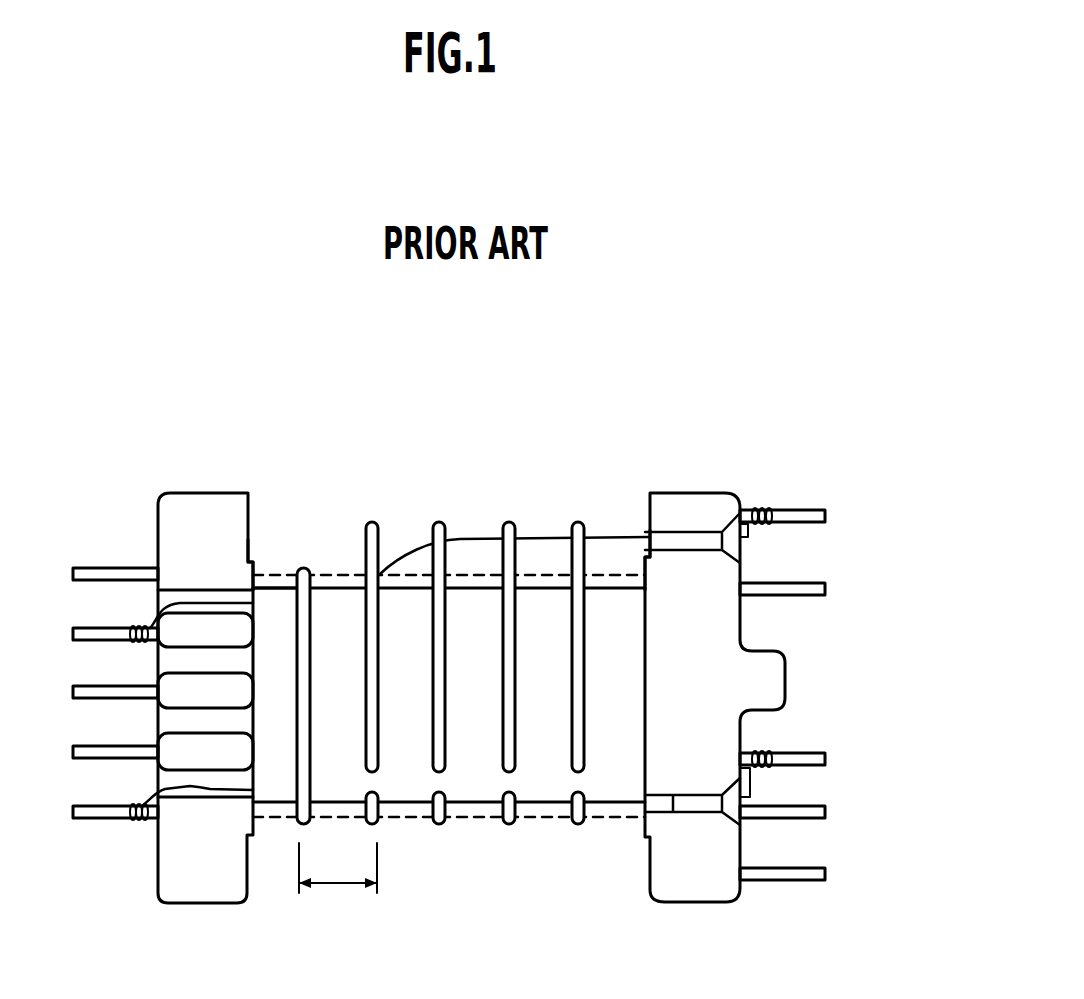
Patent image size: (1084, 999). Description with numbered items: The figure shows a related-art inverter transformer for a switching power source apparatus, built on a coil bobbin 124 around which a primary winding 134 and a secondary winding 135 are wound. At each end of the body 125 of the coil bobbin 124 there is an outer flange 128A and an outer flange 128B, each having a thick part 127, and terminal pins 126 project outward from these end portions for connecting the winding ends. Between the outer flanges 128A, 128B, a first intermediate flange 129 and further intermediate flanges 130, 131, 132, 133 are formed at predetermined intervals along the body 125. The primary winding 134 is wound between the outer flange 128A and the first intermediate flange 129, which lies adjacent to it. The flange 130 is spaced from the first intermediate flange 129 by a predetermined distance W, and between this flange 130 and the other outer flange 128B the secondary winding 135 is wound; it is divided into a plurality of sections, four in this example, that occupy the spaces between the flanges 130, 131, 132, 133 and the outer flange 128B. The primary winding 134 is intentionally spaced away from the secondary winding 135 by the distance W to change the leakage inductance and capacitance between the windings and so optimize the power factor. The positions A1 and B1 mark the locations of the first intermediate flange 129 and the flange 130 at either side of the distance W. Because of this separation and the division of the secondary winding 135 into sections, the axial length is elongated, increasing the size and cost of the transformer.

The coil bobbin 124 is at (542, 478).
The body 125 is at (605, 600).
The terminal pins 126 is at (102, 566).
The thick part 127 is at (203, 508).
The outer flange 128A is at (242, 573).
The outer flange 128B is at (657, 570).
The first intermediate flange 129 is at (302, 827).
The intermediate flange 130 is at (375, 827).
The intermediate flange 131 is at (438, 827).
The intermediate flange 132 is at (508, 827).
The intermediate flange 133 is at (578, 827).
The primary winding 134 is at (287, 583).
The secondary winding 135 is at (470, 583).
The position A1 is at (278, 568).
The position B1 is at (410, 567).
The predetermined distance W is at (338, 868).